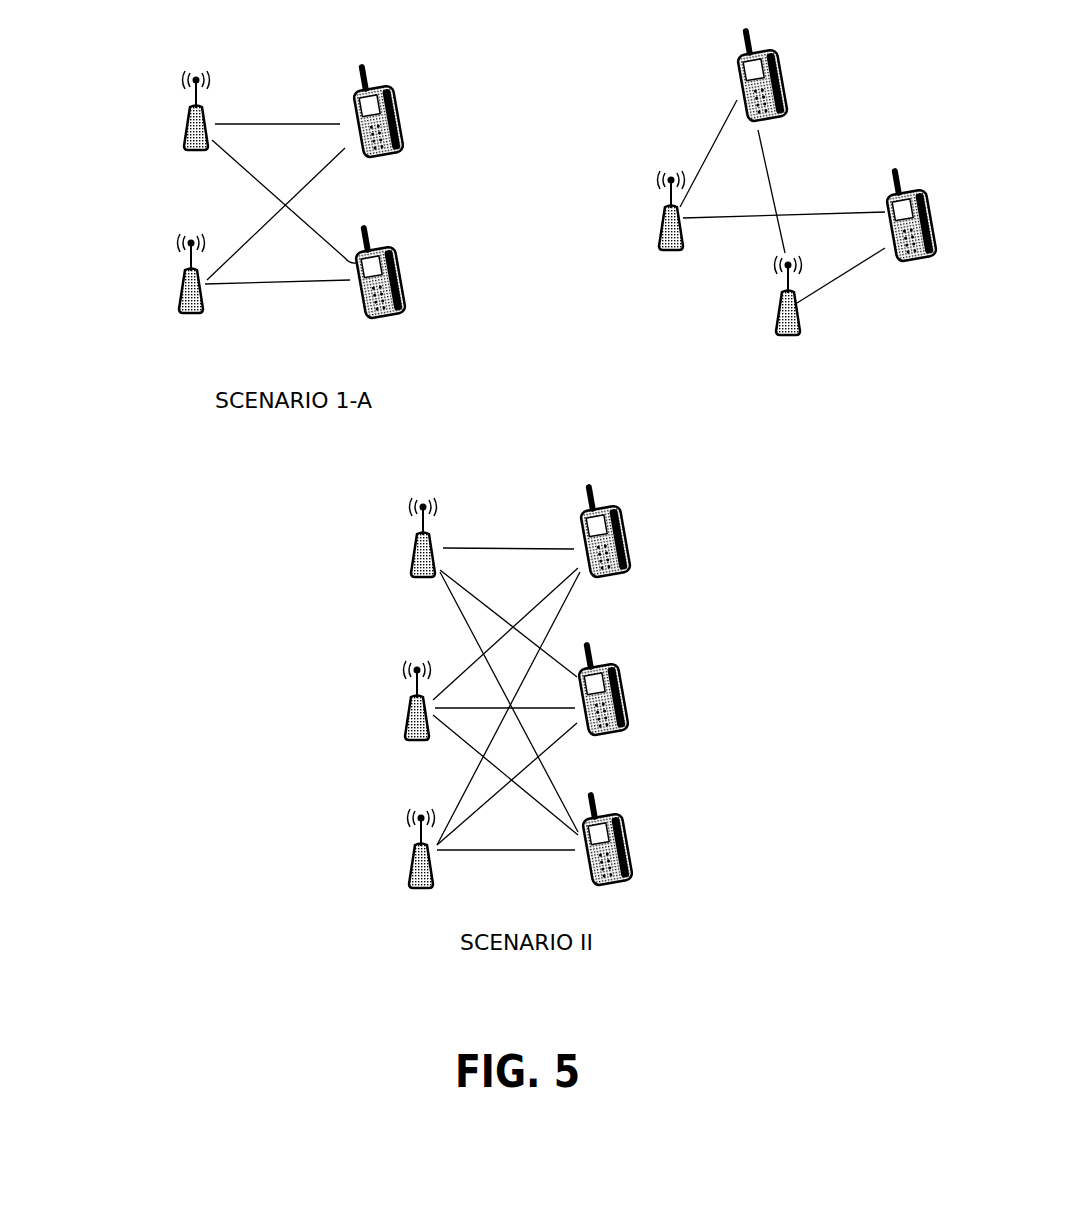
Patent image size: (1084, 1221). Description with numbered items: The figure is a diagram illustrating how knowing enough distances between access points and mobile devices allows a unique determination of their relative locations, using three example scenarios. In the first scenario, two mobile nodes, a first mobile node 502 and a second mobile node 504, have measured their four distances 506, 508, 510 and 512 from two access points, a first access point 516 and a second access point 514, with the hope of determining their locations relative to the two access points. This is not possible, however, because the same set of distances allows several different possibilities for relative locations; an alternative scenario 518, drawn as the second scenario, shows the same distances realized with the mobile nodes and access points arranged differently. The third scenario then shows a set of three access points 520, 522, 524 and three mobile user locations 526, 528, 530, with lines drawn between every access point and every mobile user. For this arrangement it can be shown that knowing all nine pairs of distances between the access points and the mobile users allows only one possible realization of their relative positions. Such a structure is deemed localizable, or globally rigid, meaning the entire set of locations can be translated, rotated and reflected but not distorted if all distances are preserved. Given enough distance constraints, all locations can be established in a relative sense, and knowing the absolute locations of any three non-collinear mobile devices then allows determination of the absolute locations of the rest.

The mobile node M1 502 is at (393, 102).
The mobile node M2 504 is at (395, 263).
The distance d11 506 is at (318, 283).
The distance d12 508 is at (270, 222).
The distance d21 510 is at (247, 171).
The distance d22 512 is at (295, 123).
The access point AP2 514 is at (187, 118).
The access point AP1 516 is at (180, 295).
The alternative scenario 518 is at (857, 127).
The access point 520 is at (410, 872).
The access point 522 is at (406, 727).
The access point 524 is at (412, 566).
The mobile user location 526 is at (623, 868).
The mobile user location 528 is at (617, 712).
The mobile user location 530 is at (620, 553).